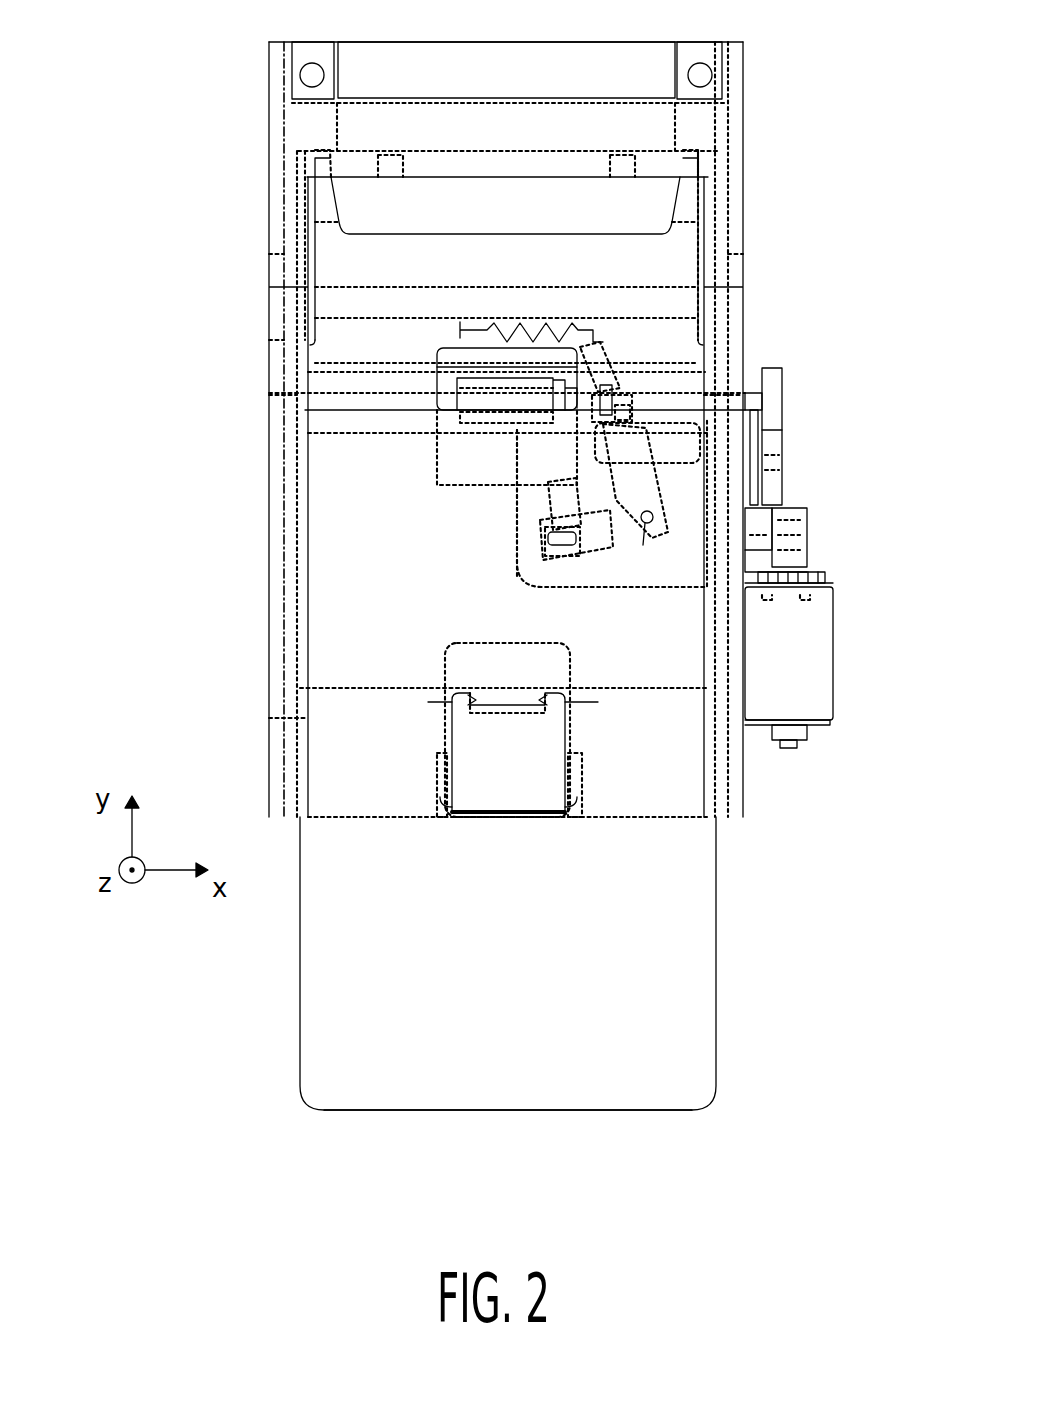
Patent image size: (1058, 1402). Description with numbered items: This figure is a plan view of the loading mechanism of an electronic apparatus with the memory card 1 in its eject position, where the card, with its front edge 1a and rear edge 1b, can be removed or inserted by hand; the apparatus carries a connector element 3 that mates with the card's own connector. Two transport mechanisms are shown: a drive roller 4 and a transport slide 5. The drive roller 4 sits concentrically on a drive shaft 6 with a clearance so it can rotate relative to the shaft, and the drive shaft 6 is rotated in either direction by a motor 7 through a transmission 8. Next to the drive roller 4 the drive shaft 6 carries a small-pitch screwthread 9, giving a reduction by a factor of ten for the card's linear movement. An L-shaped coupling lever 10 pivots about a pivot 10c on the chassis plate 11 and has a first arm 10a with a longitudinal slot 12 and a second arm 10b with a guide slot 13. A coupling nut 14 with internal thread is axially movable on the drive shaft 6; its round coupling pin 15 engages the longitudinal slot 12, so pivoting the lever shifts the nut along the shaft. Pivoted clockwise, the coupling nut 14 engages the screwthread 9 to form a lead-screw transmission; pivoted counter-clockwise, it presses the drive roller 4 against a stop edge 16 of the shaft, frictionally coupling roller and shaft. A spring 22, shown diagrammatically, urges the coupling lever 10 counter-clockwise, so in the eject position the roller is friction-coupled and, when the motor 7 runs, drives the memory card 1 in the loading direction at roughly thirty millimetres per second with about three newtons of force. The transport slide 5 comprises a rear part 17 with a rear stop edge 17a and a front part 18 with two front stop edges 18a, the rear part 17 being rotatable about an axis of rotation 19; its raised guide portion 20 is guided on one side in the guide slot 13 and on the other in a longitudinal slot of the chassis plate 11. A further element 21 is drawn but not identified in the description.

The memory card 1 is at (700, 900).
The front edge 1a is at (388, 412).
The rear edge 1b is at (540, 1111).
The connector element 3 is at (458, 162).
The drive roller 4 is at (478, 407).
The transport slide 5 is at (290, 688).
The drive shaft 6 is at (320, 402).
The motor 7 is at (820, 637).
The transmission 8 is at (772, 460).
The screwthread 9 is at (605, 410).
The coupling lever 10 is at (660, 522).
The first arm 10a is at (647, 490).
The second arm 10b is at (600, 555).
The pivot 10c is at (642, 554).
The chassis plate 11 is at (743, 270).
The longitudinal slot 12 is at (613, 383).
The guide slot 13 is at (588, 522).
The coupling nut 14 is at (607, 420).
The coupling pin 15 is at (610, 395).
The stop edge 16 is at (460, 392).
The rear part 17 is at (552, 733).
The rear stop edge 17a is at (520, 820).
The front part 18 is at (287, 485).
The front stop edges 18a is at (325, 158).
The axis of rotation 19 is at (588, 687).
The raised guide portion 20 is at (545, 542).
The stop block 21 is at (550, 498).
The spring 22 is at (520, 323).